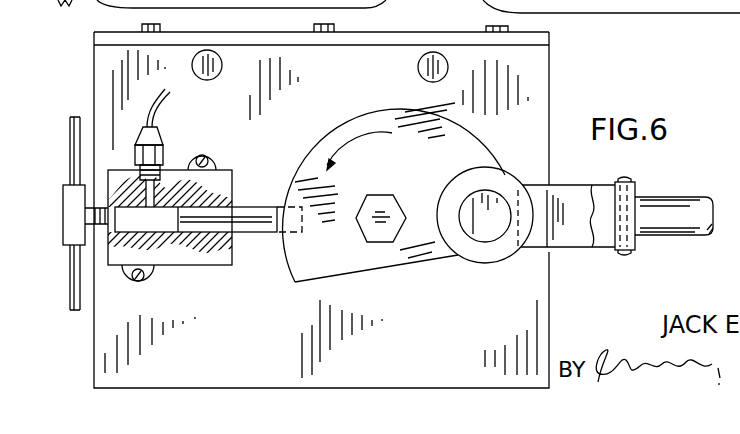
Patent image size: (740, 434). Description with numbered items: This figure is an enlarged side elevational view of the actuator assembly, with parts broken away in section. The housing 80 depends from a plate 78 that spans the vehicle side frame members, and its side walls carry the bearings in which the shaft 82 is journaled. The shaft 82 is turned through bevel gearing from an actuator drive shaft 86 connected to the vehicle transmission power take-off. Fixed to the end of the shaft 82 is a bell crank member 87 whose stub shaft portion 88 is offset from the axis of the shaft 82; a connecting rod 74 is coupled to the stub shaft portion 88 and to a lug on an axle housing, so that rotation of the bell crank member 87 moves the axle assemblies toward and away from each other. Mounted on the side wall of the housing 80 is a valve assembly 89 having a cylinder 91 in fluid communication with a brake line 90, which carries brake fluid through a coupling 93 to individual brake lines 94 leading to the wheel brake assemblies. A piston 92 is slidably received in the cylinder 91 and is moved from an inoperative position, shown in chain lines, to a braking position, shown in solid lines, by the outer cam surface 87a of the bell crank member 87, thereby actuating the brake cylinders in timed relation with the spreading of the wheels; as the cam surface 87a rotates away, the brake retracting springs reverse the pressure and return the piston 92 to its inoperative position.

The connecting rod 74 is at (535, 198).
The plate 78 is at (397, 32).
The housing 80 is at (555, 68).
The shaft 82 is at (382, 232).
The actuator drive shaft 86 is at (600, 185).
The bell crank member 87 is at (412, 170).
The cam surface 87a is at (384, 97).
The stub shaft portion 88 is at (485, 230).
The valve assembly 89 is at (218, 168).
The brake line 90 is at (163, 103).
The cylinder 91 is at (135, 238).
The piston 92 is at (262, 232).
The coupling 93 is at (63, 214).
The individual brake line 94 is at (72, 160).